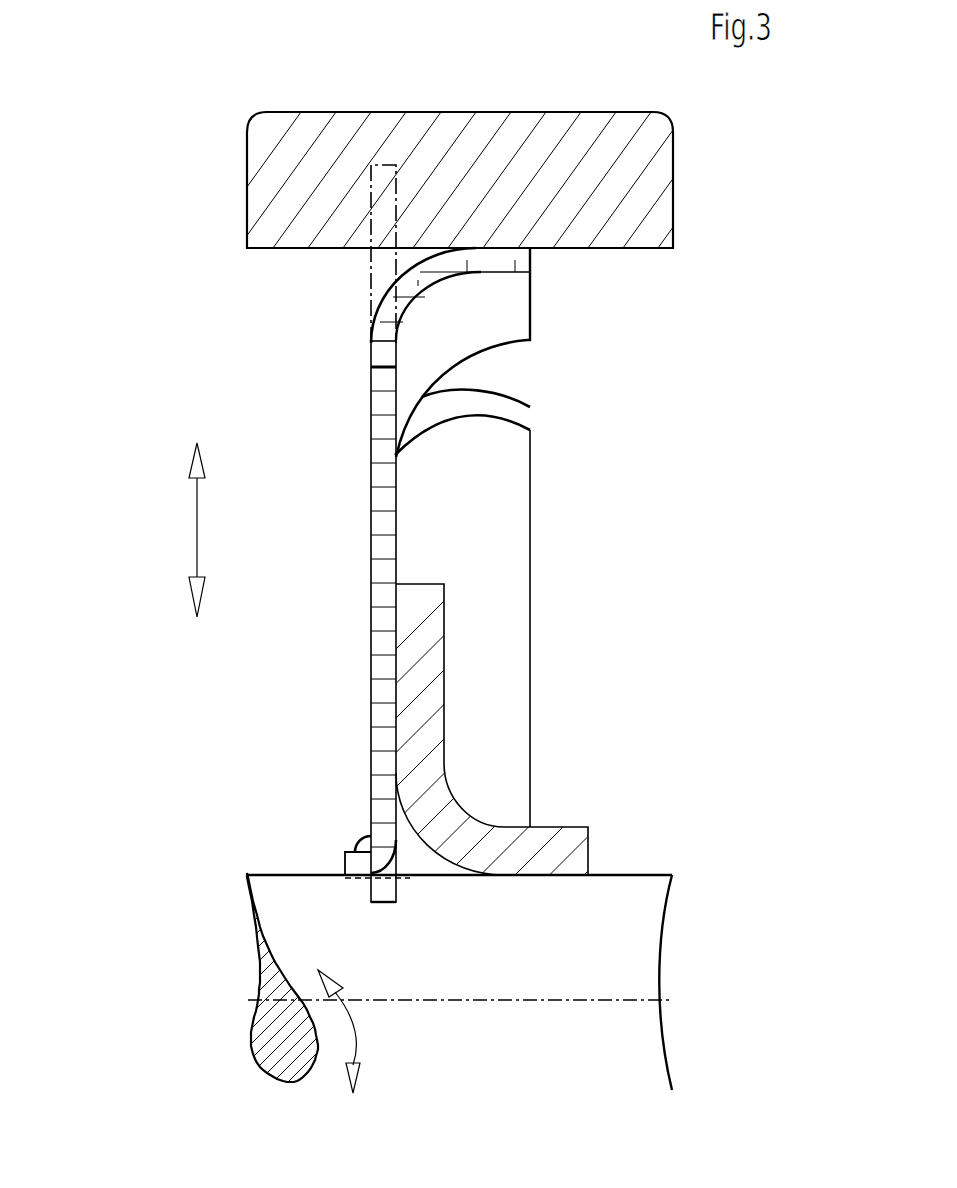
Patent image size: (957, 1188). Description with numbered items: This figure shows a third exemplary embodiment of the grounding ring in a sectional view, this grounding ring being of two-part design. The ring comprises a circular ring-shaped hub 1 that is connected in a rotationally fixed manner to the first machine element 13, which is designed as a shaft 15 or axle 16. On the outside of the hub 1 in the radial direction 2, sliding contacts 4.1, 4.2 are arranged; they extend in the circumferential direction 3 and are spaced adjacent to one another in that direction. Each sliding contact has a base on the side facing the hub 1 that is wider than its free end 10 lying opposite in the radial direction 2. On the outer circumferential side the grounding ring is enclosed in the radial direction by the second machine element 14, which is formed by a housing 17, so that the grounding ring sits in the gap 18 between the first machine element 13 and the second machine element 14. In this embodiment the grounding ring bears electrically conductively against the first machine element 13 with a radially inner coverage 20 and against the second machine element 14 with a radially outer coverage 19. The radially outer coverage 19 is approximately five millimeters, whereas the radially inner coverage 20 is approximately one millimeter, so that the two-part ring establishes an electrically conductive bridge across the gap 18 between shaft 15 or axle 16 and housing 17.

The hub 1 is at (546, 853).
The radial direction 2 is at (197, 529).
The circumferential direction 3 is at (352, 1025).
The sliding contact 4.1 is at (613, 305).
The sliding contact 4.2 is at (486, 261).
The free end 10 is at (530, 272).
The first machine element 13 is at (368, 962).
The second machine element 14 is at (438, 169).
The shaft 15 is at (368, 962).
The axle 16 is at (305, 912).
The housing 17 is at (318, 205).
The gap 18 is at (282, 621).
The radially outer coverage 19 is at (383, 190).
The radially inner coverage 20 is at (384, 890).